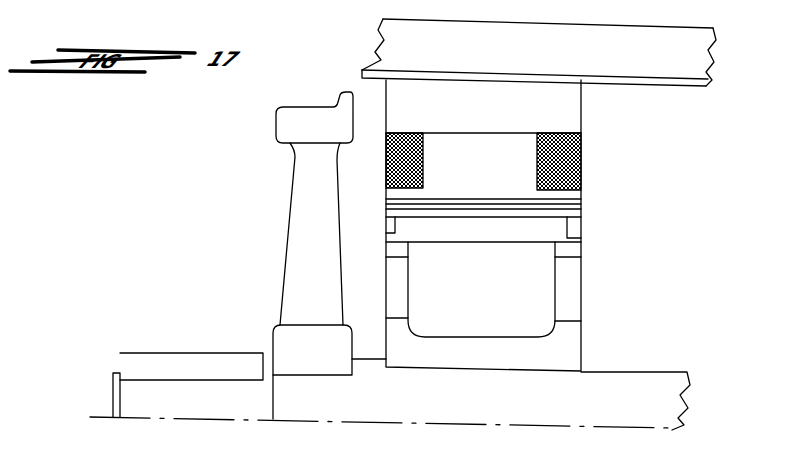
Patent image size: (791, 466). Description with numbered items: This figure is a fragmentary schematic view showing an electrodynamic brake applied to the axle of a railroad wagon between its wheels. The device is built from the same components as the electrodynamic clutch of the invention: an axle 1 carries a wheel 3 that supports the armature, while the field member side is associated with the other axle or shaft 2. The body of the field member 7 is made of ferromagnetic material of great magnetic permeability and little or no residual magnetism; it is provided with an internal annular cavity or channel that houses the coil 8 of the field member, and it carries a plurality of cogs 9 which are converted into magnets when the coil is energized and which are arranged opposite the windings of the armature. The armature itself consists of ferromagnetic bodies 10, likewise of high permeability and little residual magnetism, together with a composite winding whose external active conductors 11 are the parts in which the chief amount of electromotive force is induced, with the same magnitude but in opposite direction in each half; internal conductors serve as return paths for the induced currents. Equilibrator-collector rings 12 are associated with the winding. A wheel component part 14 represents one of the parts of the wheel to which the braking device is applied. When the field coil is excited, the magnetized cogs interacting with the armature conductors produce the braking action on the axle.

The axle 1 is at (237, 408).
The axle 2 is at (183, 363).
The wheel 3 is at (295, 250).
The field member body 7 is at (572, 115).
The coil 8 is at (575, 158).
The cogs 9 is at (573, 202).
The armature body 10 is at (557, 237).
The external active conductors 11 is at (563, 216).
The equilibrator-collector rings 12 is at (572, 232).
The wheel component part 14 is at (303, 117).